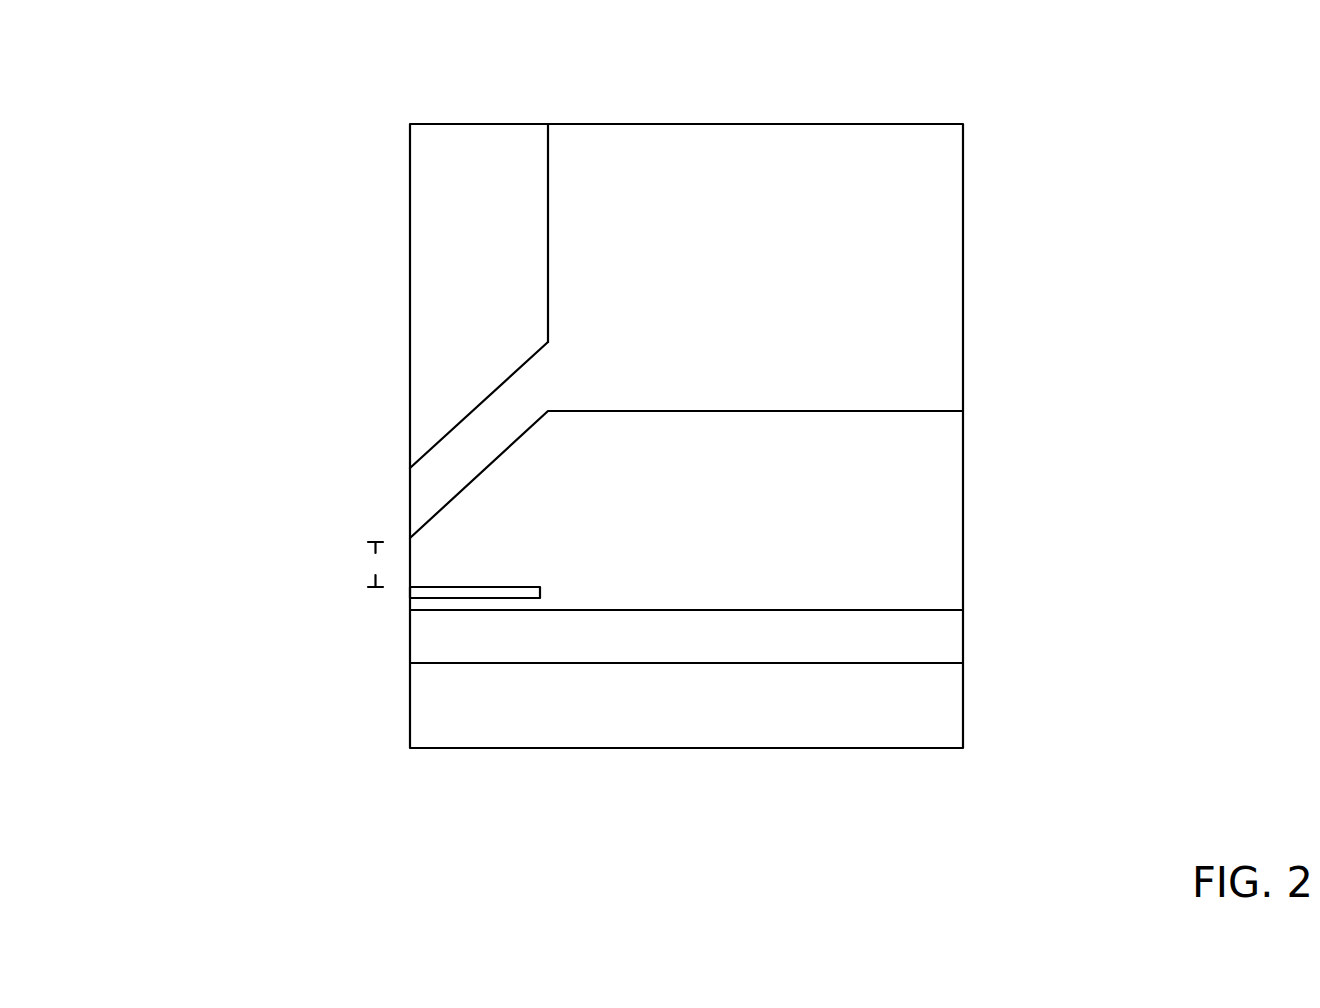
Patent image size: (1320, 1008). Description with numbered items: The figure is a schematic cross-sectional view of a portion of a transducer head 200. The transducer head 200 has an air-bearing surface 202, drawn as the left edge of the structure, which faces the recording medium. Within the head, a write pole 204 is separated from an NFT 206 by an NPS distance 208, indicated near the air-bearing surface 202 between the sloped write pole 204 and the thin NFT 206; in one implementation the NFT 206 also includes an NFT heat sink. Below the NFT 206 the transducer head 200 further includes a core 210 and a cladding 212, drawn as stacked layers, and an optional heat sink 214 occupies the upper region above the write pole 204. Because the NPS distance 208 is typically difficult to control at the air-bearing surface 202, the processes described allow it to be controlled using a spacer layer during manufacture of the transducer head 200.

The transducer head 200 is at (192, 102).
The air-bearing surface 202 is at (410, 280).
The write pole 204 is at (440, 452).
The NFT 206 is at (505, 598).
The NPS distance 208 is at (355, 553).
The core 210 is at (410, 634).
The cladding 212 is at (410, 713).
The heat sink 214 is at (468, 220).